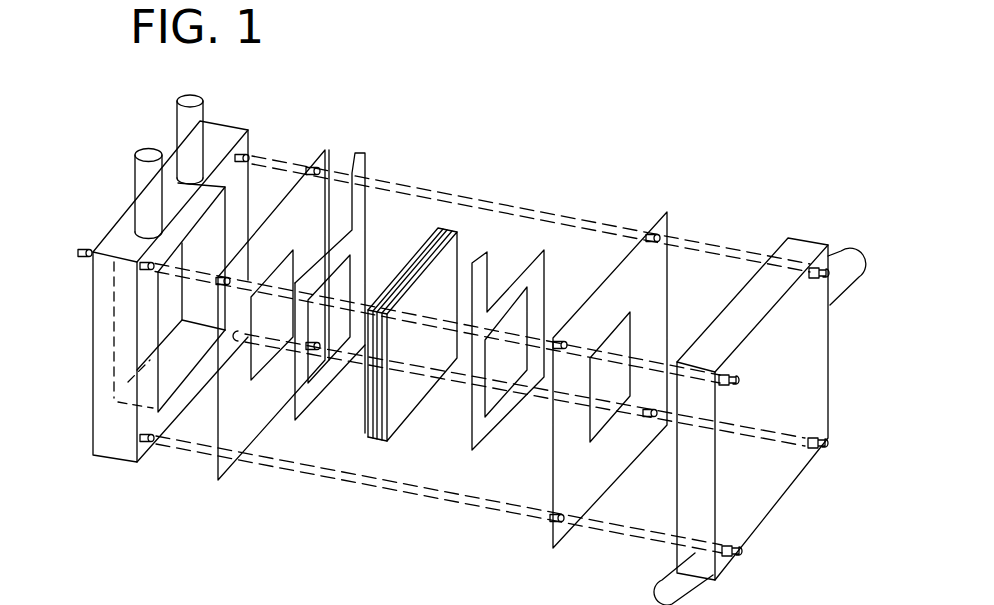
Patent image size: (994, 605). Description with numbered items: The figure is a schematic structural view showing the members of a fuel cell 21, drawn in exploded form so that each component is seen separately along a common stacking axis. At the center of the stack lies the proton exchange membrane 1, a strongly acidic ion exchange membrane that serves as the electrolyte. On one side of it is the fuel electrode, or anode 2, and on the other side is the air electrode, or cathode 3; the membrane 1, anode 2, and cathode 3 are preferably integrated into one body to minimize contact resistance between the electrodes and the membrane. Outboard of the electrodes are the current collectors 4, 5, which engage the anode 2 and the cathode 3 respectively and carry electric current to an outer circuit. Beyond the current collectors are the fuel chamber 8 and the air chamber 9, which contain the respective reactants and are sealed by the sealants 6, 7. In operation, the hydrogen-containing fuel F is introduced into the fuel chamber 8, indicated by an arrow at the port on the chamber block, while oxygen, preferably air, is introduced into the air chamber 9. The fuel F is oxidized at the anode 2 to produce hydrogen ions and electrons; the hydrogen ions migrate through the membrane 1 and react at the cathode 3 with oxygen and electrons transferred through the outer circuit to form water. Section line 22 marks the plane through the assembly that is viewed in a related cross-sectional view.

The proton exchange membrane 1 is at (370, 438).
The fuel electrode (anode) 2 is at (367, 433).
The air electrode, oxidizer electrode (cathode) 3 is at (392, 432).
The current collector 4 is at (368, 166).
The current collector 5 is at (545, 262).
The sealant 6 is at (219, 481).
The sealant 7 is at (560, 534).
The fuel chamber 8 is at (162, 372).
The air chamber 9 is at (805, 237).
The fuel cell 21 is at (672, 158).
The section line 22 is at (84, 342).
The hydrogen-containing fuel F is at (148, 152).